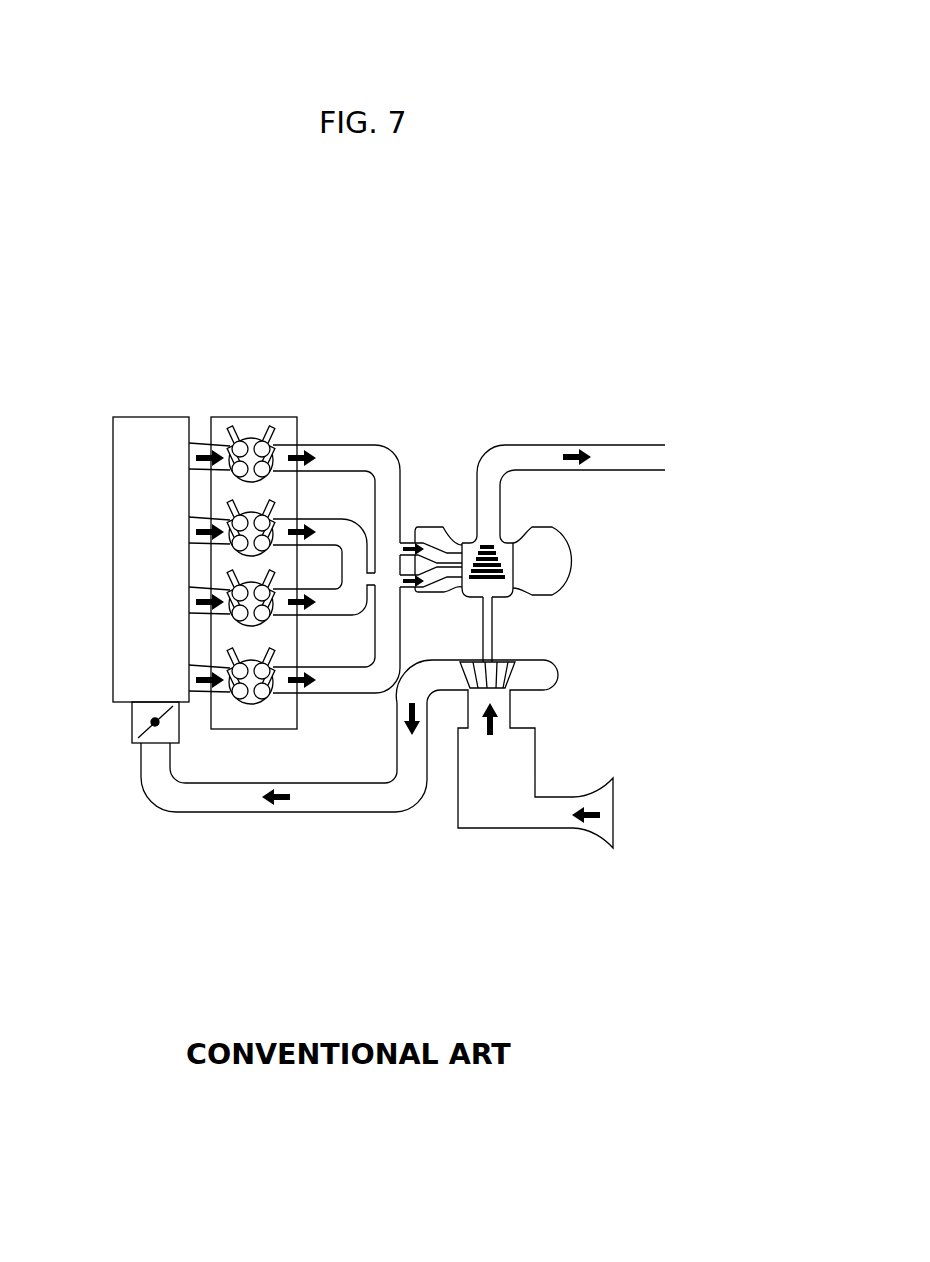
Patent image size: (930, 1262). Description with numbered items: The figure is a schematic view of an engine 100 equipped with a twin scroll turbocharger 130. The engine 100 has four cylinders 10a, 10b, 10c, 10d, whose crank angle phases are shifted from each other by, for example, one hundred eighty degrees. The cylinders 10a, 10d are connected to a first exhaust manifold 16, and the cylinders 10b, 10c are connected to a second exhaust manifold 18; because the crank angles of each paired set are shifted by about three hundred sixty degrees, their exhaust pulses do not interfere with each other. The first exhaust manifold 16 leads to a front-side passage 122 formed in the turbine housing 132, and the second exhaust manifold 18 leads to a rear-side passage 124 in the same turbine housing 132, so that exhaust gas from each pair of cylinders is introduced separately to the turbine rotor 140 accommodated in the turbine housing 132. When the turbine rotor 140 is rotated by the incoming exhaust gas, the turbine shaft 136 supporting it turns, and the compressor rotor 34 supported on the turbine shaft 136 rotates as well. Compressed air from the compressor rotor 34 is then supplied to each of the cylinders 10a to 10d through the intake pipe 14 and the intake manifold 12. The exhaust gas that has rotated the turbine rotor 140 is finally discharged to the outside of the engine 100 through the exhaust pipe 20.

The engine 100 is at (168, 316).
The intake manifold 12 is at (110, 604).
The cylinder 10a is at (264, 442).
The cylinder 10b is at (264, 516).
The cylinder 10c is at (264, 586).
The cylinder 10d is at (264, 664).
The first exhaust manifold 16 is at (356, 445).
The second exhaust manifold 18 is at (343, 522).
The exhaust pipe 20 is at (600, 445).
The front-side passage 122 is at (428, 547).
The rear-side passage 124 is at (438, 586).
The twin scroll turbocharger 130 is at (574, 612).
The turbine housing 132 is at (565, 530).
The turbine rotor 140 is at (500, 564).
The turbine shaft 136 is at (496, 620).
The compressor rotor 34 is at (508, 676).
The intake pipe 14 is at (292, 814).